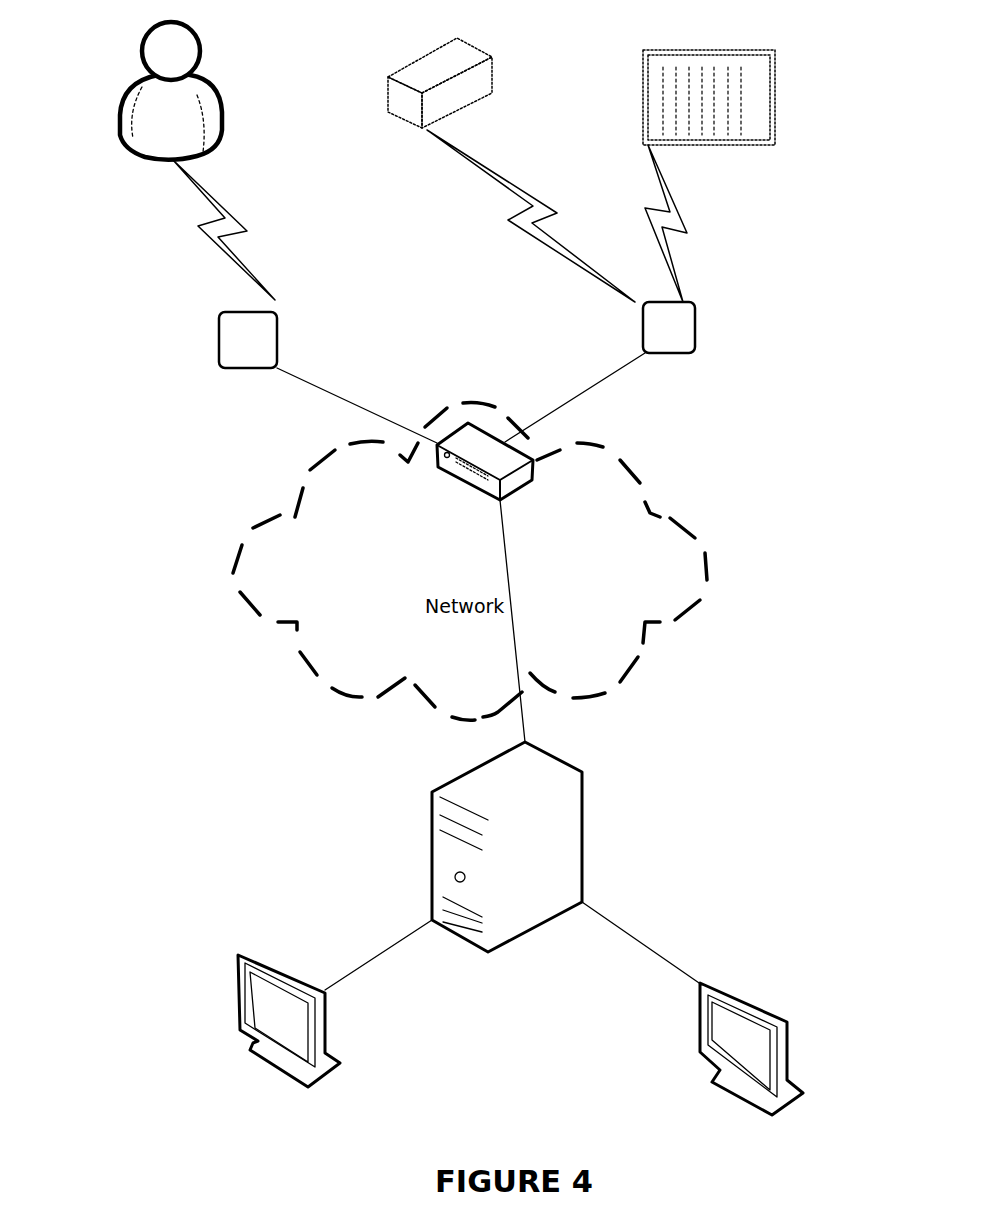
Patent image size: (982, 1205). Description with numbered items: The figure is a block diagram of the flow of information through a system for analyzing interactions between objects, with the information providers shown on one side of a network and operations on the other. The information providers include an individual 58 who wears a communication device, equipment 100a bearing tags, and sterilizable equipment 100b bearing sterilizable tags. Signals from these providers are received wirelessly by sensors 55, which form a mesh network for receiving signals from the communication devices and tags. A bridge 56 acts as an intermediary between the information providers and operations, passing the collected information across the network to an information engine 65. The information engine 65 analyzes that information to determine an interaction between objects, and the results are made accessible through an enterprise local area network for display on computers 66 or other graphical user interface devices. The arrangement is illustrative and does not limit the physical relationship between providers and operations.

The individual 58 is at (122, 108).
The equipment 100a is at (461, 83).
The sterilizable equipment 100b is at (734, 97).
The sensor 55 is at (457, 335).
The bridge 56 is at (532, 477).
The information engine 65 is at (507, 847).
The computer 66 is at (325, 1027).